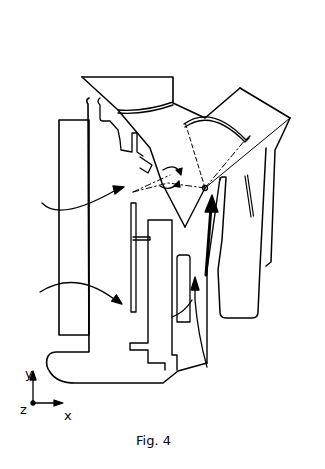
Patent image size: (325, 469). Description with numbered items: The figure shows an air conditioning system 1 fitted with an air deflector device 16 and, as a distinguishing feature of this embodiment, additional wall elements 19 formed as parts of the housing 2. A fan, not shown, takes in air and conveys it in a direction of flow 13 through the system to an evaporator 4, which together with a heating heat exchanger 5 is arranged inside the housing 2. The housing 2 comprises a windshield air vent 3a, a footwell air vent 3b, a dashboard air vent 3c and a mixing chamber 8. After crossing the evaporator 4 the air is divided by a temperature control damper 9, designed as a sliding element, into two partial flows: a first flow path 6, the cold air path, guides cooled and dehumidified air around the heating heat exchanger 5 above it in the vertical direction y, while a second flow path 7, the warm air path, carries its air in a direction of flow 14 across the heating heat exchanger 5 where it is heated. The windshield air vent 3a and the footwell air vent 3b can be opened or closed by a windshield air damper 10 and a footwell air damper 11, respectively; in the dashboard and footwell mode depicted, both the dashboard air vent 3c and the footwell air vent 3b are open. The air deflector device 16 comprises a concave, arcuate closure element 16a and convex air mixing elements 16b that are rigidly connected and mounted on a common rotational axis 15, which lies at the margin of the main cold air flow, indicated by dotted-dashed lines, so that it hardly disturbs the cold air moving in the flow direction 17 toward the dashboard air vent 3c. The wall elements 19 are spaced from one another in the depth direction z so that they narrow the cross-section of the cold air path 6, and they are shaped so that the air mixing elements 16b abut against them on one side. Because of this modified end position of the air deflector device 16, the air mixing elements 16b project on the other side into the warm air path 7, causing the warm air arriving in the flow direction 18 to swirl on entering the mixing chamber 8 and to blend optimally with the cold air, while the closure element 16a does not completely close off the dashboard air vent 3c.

The air conditioning system 1 is at (214, 86).
The housing 2 is at (90, 110).
The windshield air vent 3a is at (115, 77).
The footwell air vent 3b is at (243, 318).
The dashboard air vent 3c is at (263, 102).
The evaporator 4 is at (112, 217).
The heating heat exchanger 5 is at (162, 333).
The first flow path 6 is at (123, 185).
The second flow path 7 is at (193, 246).
The mixing chamber 8 is at (189, 206).
The temperature control damper 9 is at (131, 230).
The windshield air damper 10 is at (138, 108).
The footwell air damper 11 is at (252, 198).
The direction of flow 13 is at (60, 285).
The direction of flow 14 is at (194, 331).
The rotational axis 15 is at (266, 147).
The air deflector device 16 is at (175, 129).
The closure element 16a is at (237, 137).
The air mixing element 16b is at (135, 236).
The flow direction 17 is at (171, 172).
The flow direction 18 is at (213, 240).
The additional wall element 19 is at (144, 161).